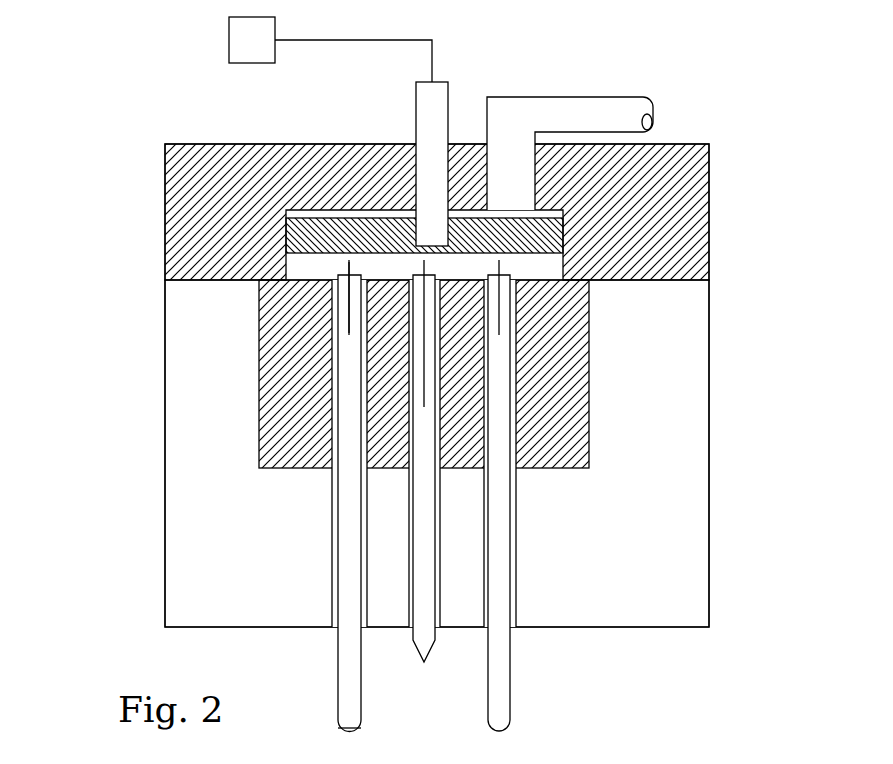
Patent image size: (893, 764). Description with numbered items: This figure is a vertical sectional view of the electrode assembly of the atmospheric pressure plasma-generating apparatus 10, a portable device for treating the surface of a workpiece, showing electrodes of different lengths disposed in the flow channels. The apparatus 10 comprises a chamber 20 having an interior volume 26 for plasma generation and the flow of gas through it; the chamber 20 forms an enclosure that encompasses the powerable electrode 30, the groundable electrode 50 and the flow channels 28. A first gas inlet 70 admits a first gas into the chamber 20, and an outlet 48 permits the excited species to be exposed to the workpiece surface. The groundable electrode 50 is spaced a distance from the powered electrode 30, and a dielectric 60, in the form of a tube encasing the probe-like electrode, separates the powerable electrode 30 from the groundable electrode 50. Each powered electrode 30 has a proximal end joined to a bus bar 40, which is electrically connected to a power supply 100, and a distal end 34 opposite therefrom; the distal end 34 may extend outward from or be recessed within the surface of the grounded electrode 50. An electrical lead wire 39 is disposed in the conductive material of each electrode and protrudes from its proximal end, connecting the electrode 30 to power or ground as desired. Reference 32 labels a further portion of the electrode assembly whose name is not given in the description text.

The apparatus 10 is at (157, 462).
The chamber 20 is at (710, 315).
The interior volume 26 is at (687, 461).
The flow channels 28 is at (517, 443).
The powerable electrode 30 is at (347, 311).
The electrode tip 32 is at (336, 746).
The distal end 34 is at (424, 656).
The electrical lead wire 39 is at (345, 267).
The bus bar 40 is at (500, 216).
The outlet 48 is at (513, 622).
The groundable electrode 50 is at (589, 388).
The dielectric 60 is at (350, 540).
The first gas inlet 70 is at (582, 117).
The power supply 100 is at (240, 37).